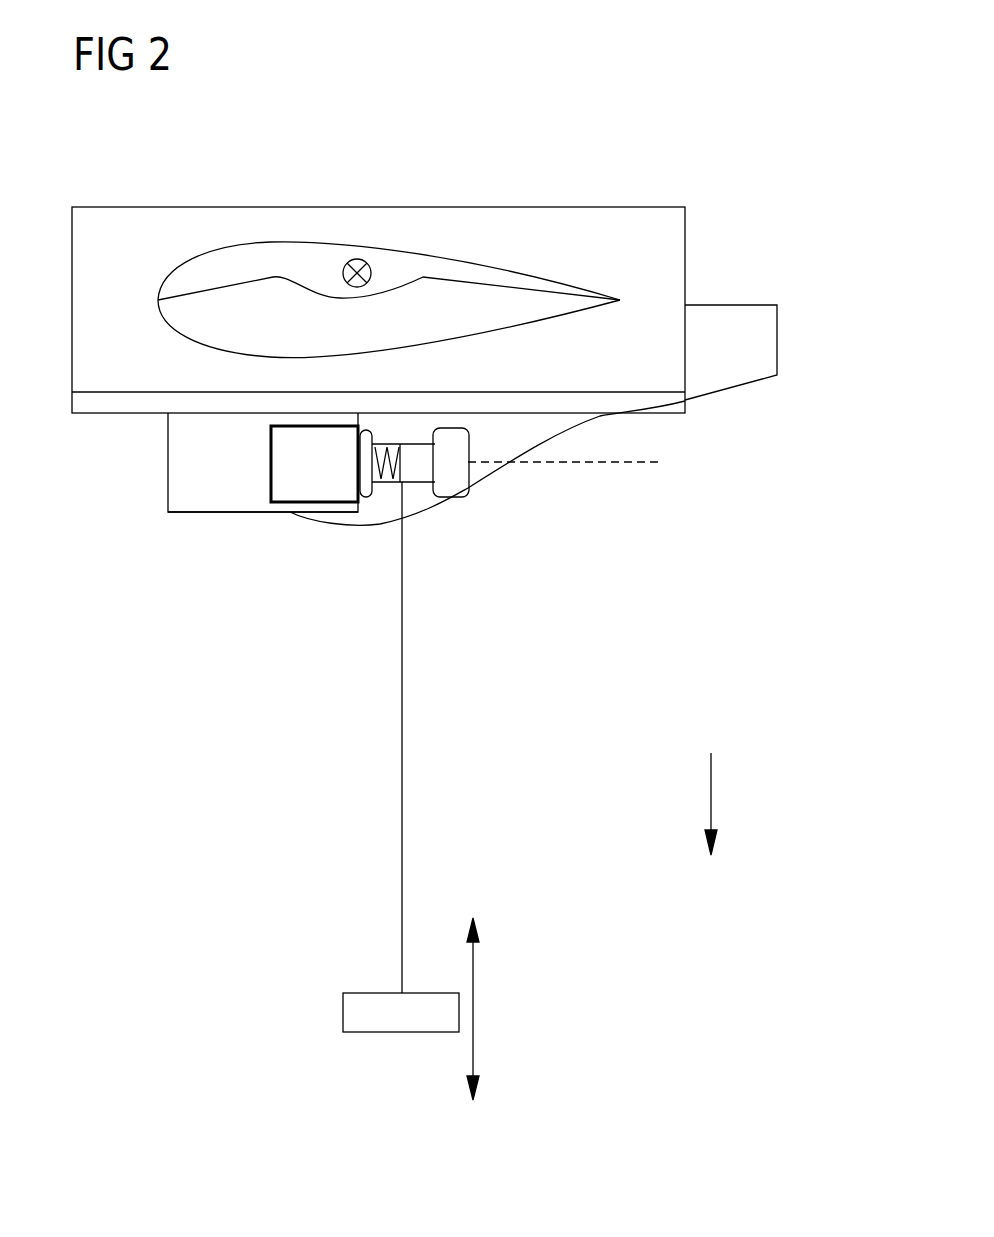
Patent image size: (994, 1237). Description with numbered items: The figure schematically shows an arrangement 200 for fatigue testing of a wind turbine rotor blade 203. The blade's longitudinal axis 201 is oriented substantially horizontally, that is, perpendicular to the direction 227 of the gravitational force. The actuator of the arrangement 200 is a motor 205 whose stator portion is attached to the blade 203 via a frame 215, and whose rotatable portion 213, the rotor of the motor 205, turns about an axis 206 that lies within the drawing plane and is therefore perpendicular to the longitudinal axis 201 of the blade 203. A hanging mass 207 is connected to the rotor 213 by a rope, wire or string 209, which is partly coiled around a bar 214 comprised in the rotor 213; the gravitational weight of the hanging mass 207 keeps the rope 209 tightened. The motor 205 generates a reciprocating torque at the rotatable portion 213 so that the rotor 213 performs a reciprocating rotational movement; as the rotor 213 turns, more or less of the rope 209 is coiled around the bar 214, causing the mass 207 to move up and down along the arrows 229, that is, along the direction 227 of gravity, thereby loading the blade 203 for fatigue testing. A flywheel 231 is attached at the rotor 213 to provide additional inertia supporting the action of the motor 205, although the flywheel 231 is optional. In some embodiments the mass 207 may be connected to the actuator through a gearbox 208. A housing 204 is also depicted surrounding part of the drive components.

The arrangement for fatigue testing 200 is at (548, 695).
The longitudinal axis 201 is at (357, 258).
The rotor blade 203 is at (276, 159).
The housing 204 is at (178, 462).
The motor 205 is at (228, 503).
The axis of the rotatable part 206 is at (605, 462).
The mass 207 is at (343, 1013).
The gearbox 208 is at (303, 487).
The rope 209 is at (405, 835).
The rotatable portion 213 is at (363, 500).
The bar 214 is at (412, 472).
The frame 215 is at (558, 222).
The direction of the gravitational force 227 is at (712, 800).
The arrows 229 is at (476, 1010).
The flywheel 231 is at (457, 488).